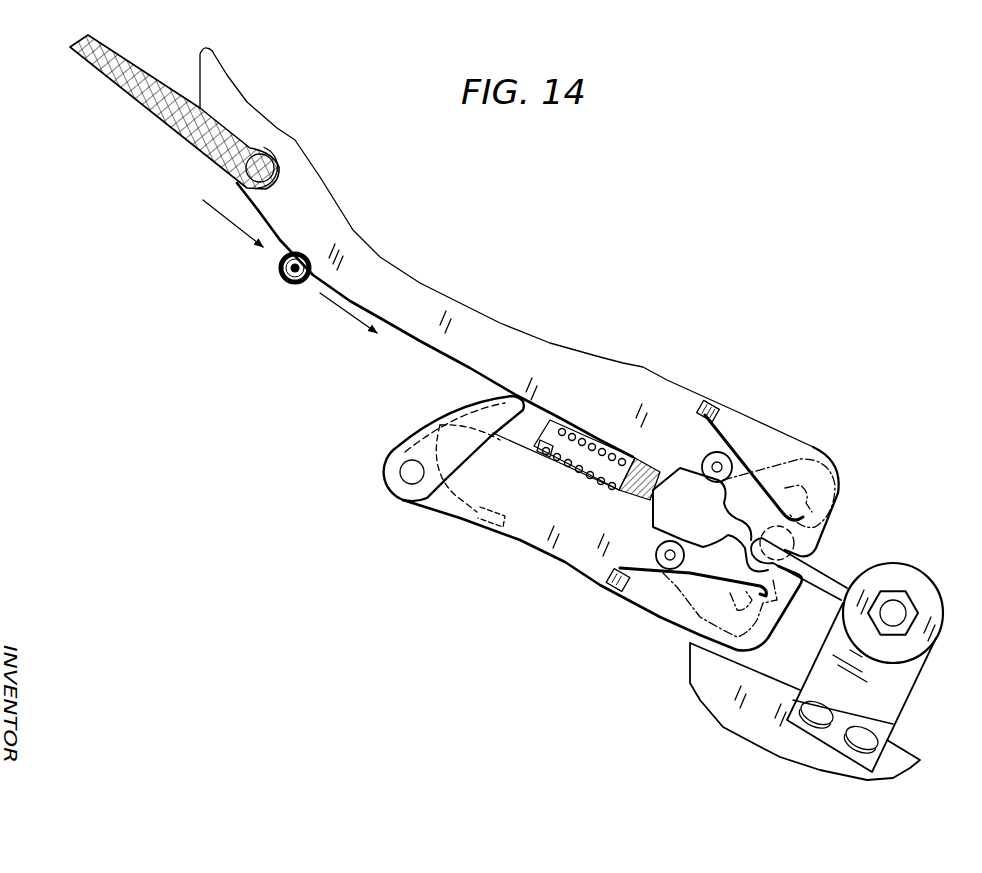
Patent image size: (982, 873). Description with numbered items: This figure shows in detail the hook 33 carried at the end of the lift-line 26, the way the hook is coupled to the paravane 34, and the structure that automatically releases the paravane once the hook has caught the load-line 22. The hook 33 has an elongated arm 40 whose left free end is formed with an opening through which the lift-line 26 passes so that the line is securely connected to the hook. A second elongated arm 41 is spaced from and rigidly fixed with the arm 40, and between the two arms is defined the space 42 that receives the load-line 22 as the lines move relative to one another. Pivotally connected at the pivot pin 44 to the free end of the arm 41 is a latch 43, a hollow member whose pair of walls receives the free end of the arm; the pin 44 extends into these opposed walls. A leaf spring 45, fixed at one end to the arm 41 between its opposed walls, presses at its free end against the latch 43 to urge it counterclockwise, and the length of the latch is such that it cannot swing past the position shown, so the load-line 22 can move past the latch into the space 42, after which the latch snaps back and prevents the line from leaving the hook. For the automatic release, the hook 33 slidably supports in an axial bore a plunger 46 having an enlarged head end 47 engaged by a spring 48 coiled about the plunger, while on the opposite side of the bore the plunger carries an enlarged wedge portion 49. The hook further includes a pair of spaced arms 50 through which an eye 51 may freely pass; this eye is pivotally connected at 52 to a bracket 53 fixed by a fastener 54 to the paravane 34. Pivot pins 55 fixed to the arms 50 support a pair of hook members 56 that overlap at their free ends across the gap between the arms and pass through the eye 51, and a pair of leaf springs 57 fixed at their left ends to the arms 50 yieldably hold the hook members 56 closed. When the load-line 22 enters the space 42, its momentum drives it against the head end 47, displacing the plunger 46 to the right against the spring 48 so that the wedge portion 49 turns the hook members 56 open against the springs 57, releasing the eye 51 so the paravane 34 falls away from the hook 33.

The load-line 22 is at (285, 278).
The lift-line 26 is at (104, 76).
The hook 33 is at (582, 338).
The paravane 34 is at (710, 700).
The elongated arm 40 is at (477, 333).
The second elongated arm 41 is at (545, 537).
The space 42 is at (533, 413).
The latch 43 is at (394, 457).
The pivot pin 44 is at (410, 478).
The leaf spring 45 is at (466, 514).
The plunger 46 is at (640, 487).
The head end 47 is at (550, 447).
The spring 48 is at (591, 476).
The wedge portion 49 is at (680, 492).
The arms 50 is at (813, 460).
The eye 51 is at (838, 576).
The pivotal connection 52 is at (900, 613).
The bracket 53 is at (900, 693).
The fastener 54 is at (835, 715).
The pivot pins 55 is at (724, 460).
The hook members 56 is at (750, 498).
The leaf springs 57 is at (718, 428).